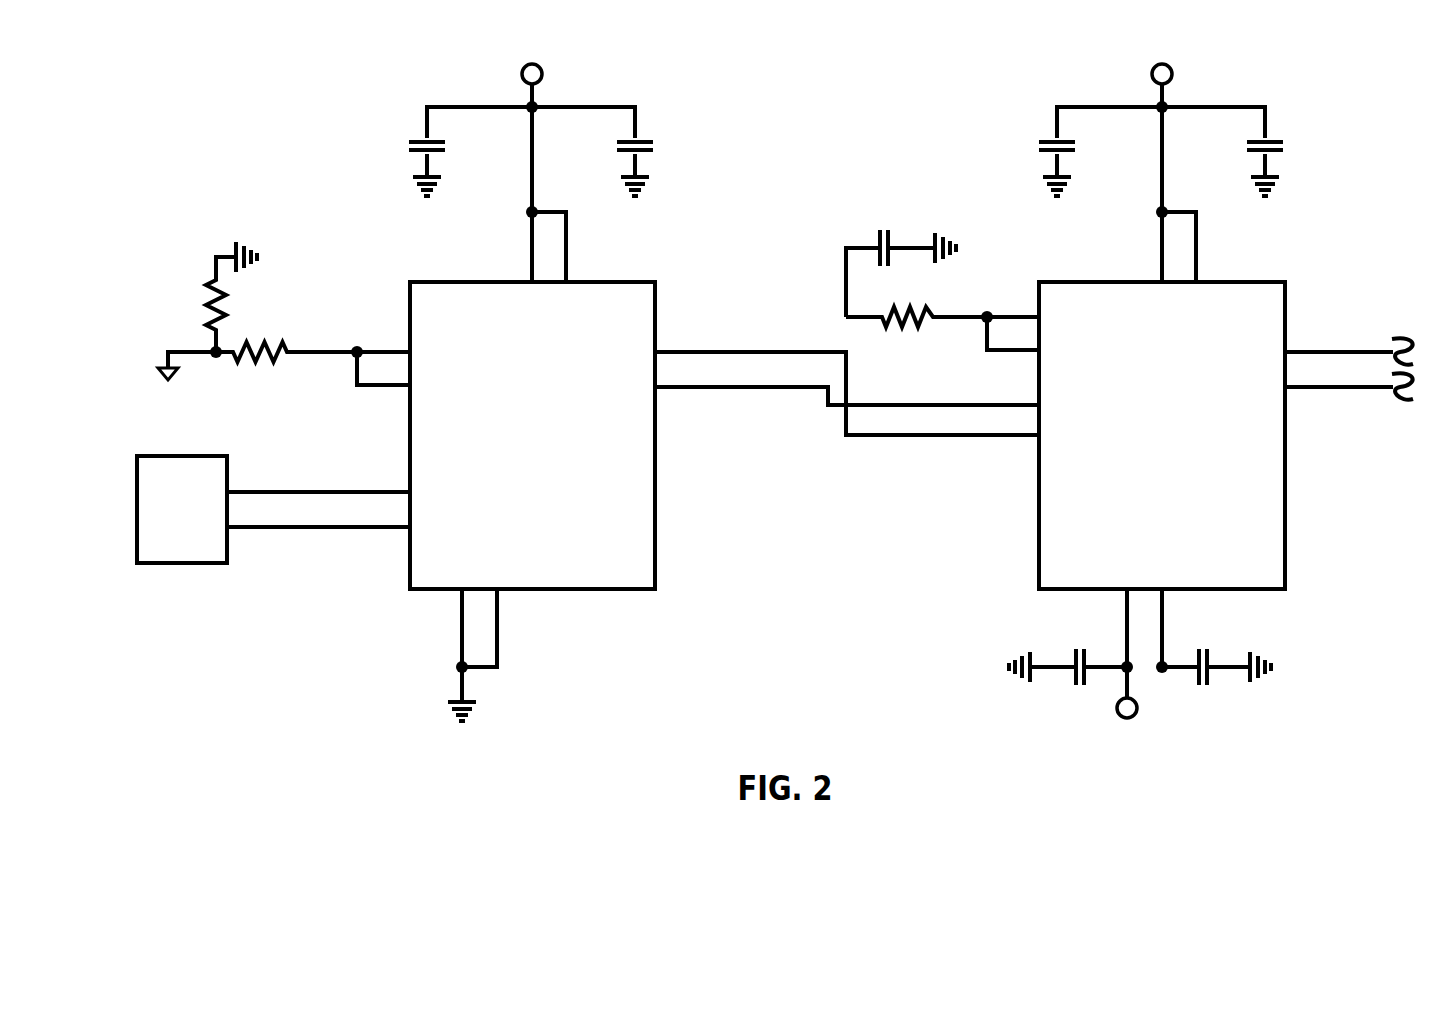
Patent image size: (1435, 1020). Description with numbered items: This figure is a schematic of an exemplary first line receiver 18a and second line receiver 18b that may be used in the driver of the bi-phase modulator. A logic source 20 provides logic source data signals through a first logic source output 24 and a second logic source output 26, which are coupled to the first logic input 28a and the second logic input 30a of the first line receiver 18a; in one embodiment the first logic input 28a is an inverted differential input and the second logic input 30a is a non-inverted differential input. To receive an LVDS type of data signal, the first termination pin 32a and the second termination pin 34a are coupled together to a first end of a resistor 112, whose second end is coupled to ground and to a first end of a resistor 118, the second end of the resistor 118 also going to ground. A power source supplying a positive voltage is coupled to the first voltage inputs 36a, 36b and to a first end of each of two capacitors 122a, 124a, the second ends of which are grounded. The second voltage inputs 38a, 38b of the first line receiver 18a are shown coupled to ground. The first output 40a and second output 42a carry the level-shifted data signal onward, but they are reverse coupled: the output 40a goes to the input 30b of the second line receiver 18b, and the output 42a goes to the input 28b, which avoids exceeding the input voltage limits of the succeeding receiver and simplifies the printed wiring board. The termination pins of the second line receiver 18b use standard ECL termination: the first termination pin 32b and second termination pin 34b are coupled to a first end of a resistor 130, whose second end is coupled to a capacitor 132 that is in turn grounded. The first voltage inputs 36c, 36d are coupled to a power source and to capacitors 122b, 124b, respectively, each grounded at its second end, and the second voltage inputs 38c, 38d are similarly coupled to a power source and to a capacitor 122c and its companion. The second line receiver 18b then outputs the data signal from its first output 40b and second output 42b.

The first line receiver 18a is at (532, 435).
The second line receiver 18b is at (1162, 435).
The logic source 20 is at (182, 509).
The first logic source output 24 is at (228, 488).
The second logic source output 26 is at (228, 530).
The first logic input 28a is at (405, 490).
The input 28b is at (1034, 408).
The second logic input 30a is at (405, 532).
The input 30b is at (1034, 440).
The first termination pin 32a is at (407, 350).
The first termination pin 32b is at (1030, 313).
The second termination pin 34a is at (405, 388).
The second termination pin 34b is at (1034, 355).
The first voltage input 36a is at (532, 280).
The first voltage input 36b is at (568, 280).
The first voltage input 36c is at (1160, 278).
The first voltage input 36d is at (1198, 278).
The second voltage input 38a is at (458, 592).
The second voltage input 38b is at (500, 592).
The second voltage input 38c is at (1122, 594).
The second voltage input 38d is at (1165, 594).
The first output 40a is at (658, 350).
The first output 40b is at (1288, 350).
The second output 42a is at (658, 390).
The second output 42b is at (1288, 390).
The resistor 112 is at (268, 342).
The resistor 118 is at (210, 292).
The capacitor 122a is at (408, 148).
The capacitor 122b is at (1040, 150).
The capacitor 122c is at (1072, 688).
The capacitor 124a is at (655, 150).
The capacitor 124b is at (1285, 152).
The resistor 130 is at (905, 325).
The capacitor 132 is at (875, 235).